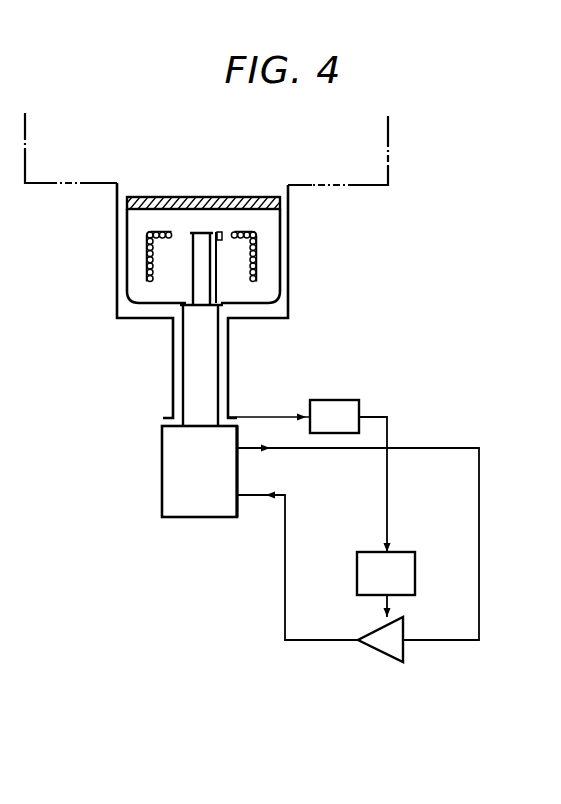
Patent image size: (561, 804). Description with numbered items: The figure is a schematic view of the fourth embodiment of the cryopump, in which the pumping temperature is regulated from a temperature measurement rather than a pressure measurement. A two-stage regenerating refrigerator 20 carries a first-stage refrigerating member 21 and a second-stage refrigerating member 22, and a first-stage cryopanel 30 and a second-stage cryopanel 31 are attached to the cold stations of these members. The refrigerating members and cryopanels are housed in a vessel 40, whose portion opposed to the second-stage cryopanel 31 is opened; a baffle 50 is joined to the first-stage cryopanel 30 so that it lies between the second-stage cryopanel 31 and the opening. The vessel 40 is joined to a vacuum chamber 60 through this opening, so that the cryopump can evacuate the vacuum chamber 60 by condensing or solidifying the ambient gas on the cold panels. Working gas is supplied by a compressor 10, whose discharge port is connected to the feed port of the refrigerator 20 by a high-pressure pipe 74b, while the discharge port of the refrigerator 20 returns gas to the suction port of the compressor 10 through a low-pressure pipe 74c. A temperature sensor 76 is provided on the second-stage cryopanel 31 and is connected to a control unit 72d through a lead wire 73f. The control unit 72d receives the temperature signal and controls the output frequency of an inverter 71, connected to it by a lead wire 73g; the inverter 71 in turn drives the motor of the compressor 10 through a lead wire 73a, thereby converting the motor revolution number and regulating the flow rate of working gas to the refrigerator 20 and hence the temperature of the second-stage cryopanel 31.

The compressor 10 is at (404, 655).
The refrigerator 20 is at (141, 454).
The first-stage refrigerating member 21 is at (182, 346).
The second-stage refrigerating member 22 is at (192, 261).
The first-stage cryopanel 30 is at (126, 289).
The second-stage cryopanel 31 is at (146, 262).
The vessel 40 is at (116, 243).
The baffle 50 is at (148, 196).
The vacuum chamber 60 is at (389, 166).
The inverter 71 is at (416, 565).
The control unit 72d is at (351, 399).
The lead wire 73a is at (384, 612).
The lead wire 73f is at (271, 416).
The lead wire 73g is at (388, 505).
The high-pressure pipe 74b is at (284, 555).
The low-pressure pipe 74c is at (480, 505).
The temperature sensor 76 is at (222, 241).